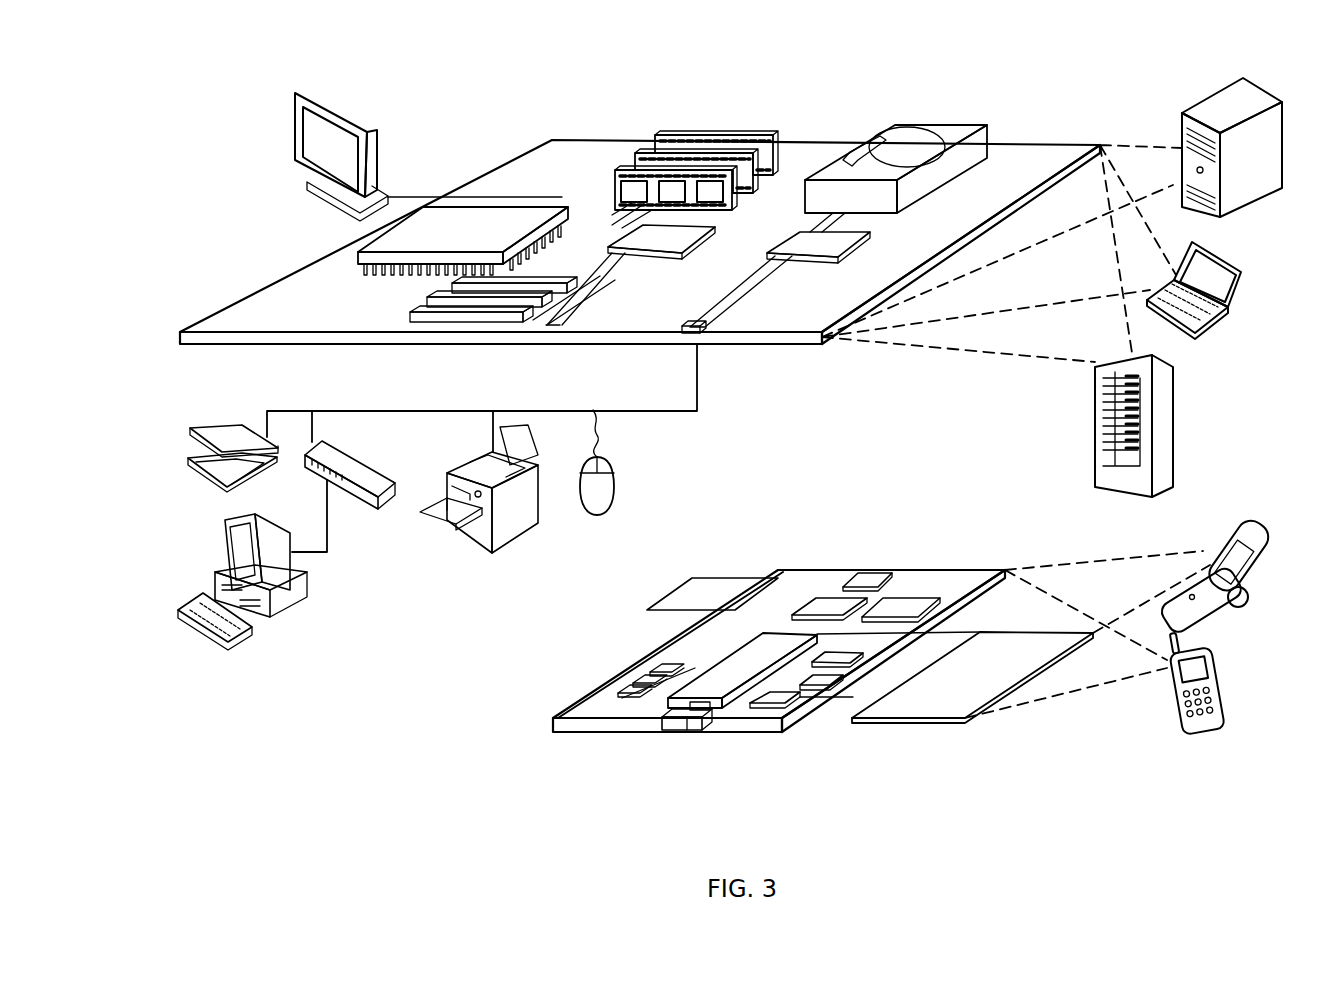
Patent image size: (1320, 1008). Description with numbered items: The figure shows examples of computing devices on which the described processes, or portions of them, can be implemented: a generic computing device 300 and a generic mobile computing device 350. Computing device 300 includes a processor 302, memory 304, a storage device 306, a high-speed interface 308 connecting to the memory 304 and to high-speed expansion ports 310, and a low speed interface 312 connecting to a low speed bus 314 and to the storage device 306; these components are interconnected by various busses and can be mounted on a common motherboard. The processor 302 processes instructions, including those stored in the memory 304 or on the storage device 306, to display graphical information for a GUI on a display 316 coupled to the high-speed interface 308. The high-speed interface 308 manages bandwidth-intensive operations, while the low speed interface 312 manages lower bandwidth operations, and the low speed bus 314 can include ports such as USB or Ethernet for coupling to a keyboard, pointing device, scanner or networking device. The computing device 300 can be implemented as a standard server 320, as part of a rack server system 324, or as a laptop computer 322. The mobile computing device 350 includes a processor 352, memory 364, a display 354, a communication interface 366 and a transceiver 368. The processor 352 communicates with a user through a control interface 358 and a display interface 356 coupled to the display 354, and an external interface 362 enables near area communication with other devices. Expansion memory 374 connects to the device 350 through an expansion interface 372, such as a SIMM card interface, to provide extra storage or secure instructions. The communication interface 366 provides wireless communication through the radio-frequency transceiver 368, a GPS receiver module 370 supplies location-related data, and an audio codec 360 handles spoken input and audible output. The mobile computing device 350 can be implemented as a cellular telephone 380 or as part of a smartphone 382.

The computing device 300 is at (474, 116).
The processor 302 is at (358, 253).
The memory 304 is at (672, 170).
The storage device 306 is at (880, 124).
The high-speed interface 308 is at (610, 247).
The high-speed expansion ports 310 is at (417, 313).
The low speed interface 312 is at (803, 238).
The low speed bus 314 is at (698, 332).
The display 316 is at (291, 90).
The standard server 320 is at (1181, 132).
The laptop computer 322 is at (1237, 268).
The rack server system 324 is at (1098, 449).
The mobile computing device 350 is at (527, 731).
The processor 352 is at (710, 690).
The display 354 is at (937, 707).
The display interface 356 is at (786, 703).
The control interface 358 is at (821, 687).
The audio codec 360 is at (840, 659).
The external interface 362 is at (680, 722).
The memory 364 is at (639, 679).
The communication interface 366 is at (815, 603).
The transceiver 368 is at (900, 602).
The GPS receiver module 370 is at (870, 583).
The expansion interface 372 is at (750, 582).
The expansion memory 374 is at (687, 580).
The cellular telephone 380 is at (1227, 528).
The smartphone 382 is at (1169, 696).